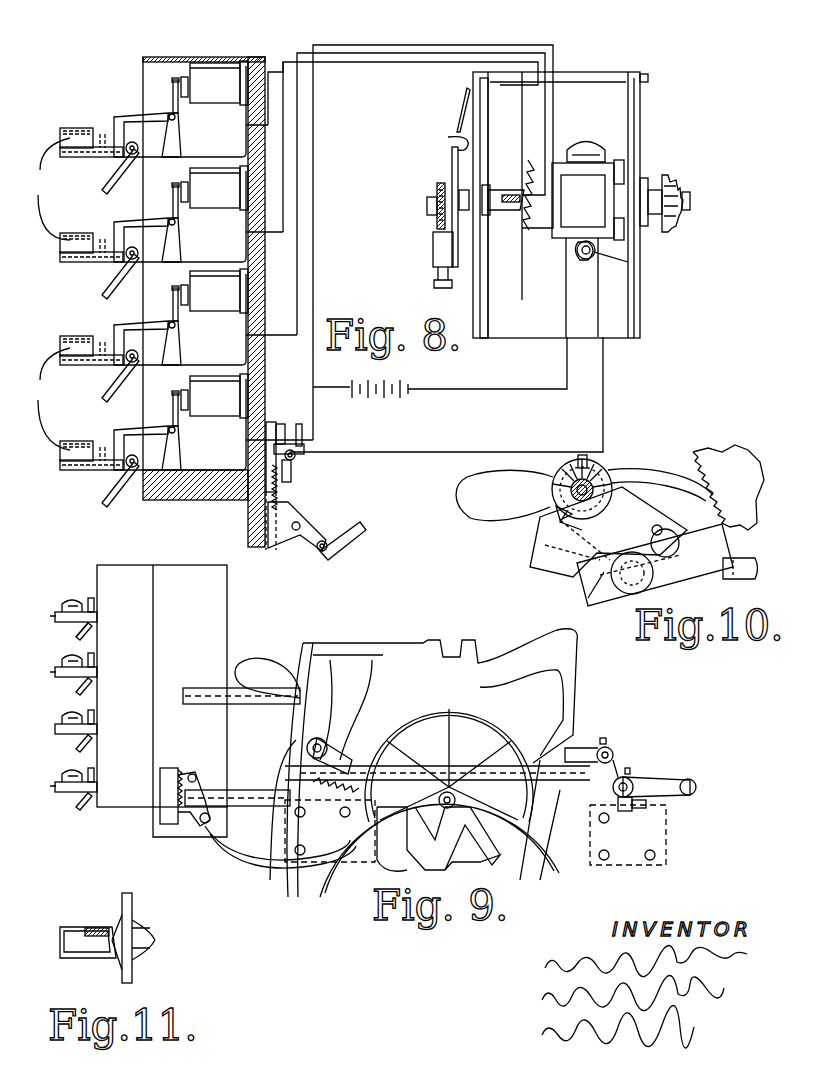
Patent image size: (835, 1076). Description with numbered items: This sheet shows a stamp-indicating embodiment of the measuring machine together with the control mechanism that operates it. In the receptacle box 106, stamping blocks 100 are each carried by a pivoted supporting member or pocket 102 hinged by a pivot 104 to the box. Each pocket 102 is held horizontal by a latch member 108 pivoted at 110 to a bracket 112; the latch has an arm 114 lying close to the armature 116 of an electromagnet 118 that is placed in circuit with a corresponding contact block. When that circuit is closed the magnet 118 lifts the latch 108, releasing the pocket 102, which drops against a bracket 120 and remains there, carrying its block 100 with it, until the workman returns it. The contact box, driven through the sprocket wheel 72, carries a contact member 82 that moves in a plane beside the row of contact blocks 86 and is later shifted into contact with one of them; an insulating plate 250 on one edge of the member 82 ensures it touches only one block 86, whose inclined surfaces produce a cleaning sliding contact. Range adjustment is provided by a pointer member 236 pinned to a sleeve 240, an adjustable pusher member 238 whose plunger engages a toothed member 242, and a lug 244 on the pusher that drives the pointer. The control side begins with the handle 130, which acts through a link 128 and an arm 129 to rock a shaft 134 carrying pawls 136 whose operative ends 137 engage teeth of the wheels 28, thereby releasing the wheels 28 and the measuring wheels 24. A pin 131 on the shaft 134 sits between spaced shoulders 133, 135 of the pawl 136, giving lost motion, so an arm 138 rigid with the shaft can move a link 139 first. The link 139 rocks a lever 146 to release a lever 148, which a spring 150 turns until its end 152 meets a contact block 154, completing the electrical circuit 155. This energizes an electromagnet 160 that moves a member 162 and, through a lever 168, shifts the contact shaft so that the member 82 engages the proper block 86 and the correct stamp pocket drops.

In FIG. 9, the measuring wheels 24 is at (420, 862).
In FIG. 10, the wheels 28 is at (712, 452).
In FIG. 9, the wheels 28 is at (578, 702).
In FIG. 8, the sprocket wheel 72 is at (676, 228).
In FIG. 8, the contact member 82 is at (513, 212).
In FIG. 11, the contact member 82 is at (62, 930).
In FIG. 8, the contact blocks 86 is at (528, 235).
In FIG. 11, the contact blocks 86 is at (147, 938).
In FIG. 8, the stamping blocks 100 is at (40, 294).
In FIG. 9, the stamping blocks 100 is at (66, 602).
In FIG. 8, the supporting member or pocket 102 is at (72, 158).
In FIG. 9, the supporting member or pocket 102 is at (56, 614).
In FIG. 8, the pivot 104 is at (132, 156).
In FIG. 8, the receptacle box 106 is at (150, 58).
In FIG. 9, the receptacle box 106 is at (125, 566).
In FIG. 8, the latch member 108 is at (120, 114).
In FIG. 8, the pivot 110 is at (176, 117).
In FIG. 8, the bracket 112 is at (177, 142).
In FIG. 8, the arm 114 is at (172, 96).
In FIG. 8, the armature 116 is at (183, 76).
In FIG. 8, the electromagnet 118 is at (212, 75).
In FIG. 8, the bracket 120 is at (108, 187).
In FIG. 9, the bracket 120 is at (78, 636).
In FIG. 10, the link 128 is at (742, 578).
In FIG. 9, the link 128 is at (490, 768).
In FIG. 10, the arm 129 is at (598, 546).
In FIG. 9, the handle 130 is at (694, 781).
In FIG. 10, the pin 131 is at (583, 455).
In FIG. 10, the shoulder 133 is at (560, 470).
In FIG. 10, the shaft 134 is at (598, 462).
In FIG. 9, the shaft 134 is at (316, 738).
In FIG. 10, the shoulder 135 is at (596, 484).
In FIG. 10, the pawls 136 is at (464, 492).
In FIG. 9, the pawls 136 is at (282, 760).
In FIG. 10, the operative ends 137 is at (704, 492).
In FIG. 9, the operative ends 137 is at (440, 770).
In FIG. 10, the arm 138 is at (672, 520).
In FIG. 8, the link 139 is at (350, 548).
In FIG. 10, the link 139 is at (605, 601).
In FIG. 9, the link 139 is at (196, 840).
In FIG. 8, the lever 146 is at (308, 538).
In FIG. 9, the lever 146 is at (170, 840).
In FIG. 8, the lever 148 is at (292, 466).
In FIG. 8, the spring 150 is at (282, 495).
In FIG. 8, the end of lever 152 is at (300, 430).
In FIG. 8, the contact block 154 is at (282, 428).
In FIG. 8, the electrical circuit 155 is at (372, 456).
In FIG. 8, the electromagnet 160 is at (590, 195).
In FIG. 8, the member 162 is at (588, 150).
In FIG. 8, the lever 168 is at (578, 258).
In FIG. 8, the pointer member 236 is at (462, 112).
In FIG. 8, the adjustable pusher member 238 is at (452, 164).
In FIG. 8, the sleeve 240 is at (428, 236).
In FIG. 8, the toothed member 242 is at (436, 224).
In FIG. 8, the lug 244 is at (436, 135).
In FIG. 8, the plate of insulation material 250 is at (518, 194).
In FIG. 11, the plate of insulation material 250 is at (90, 927).